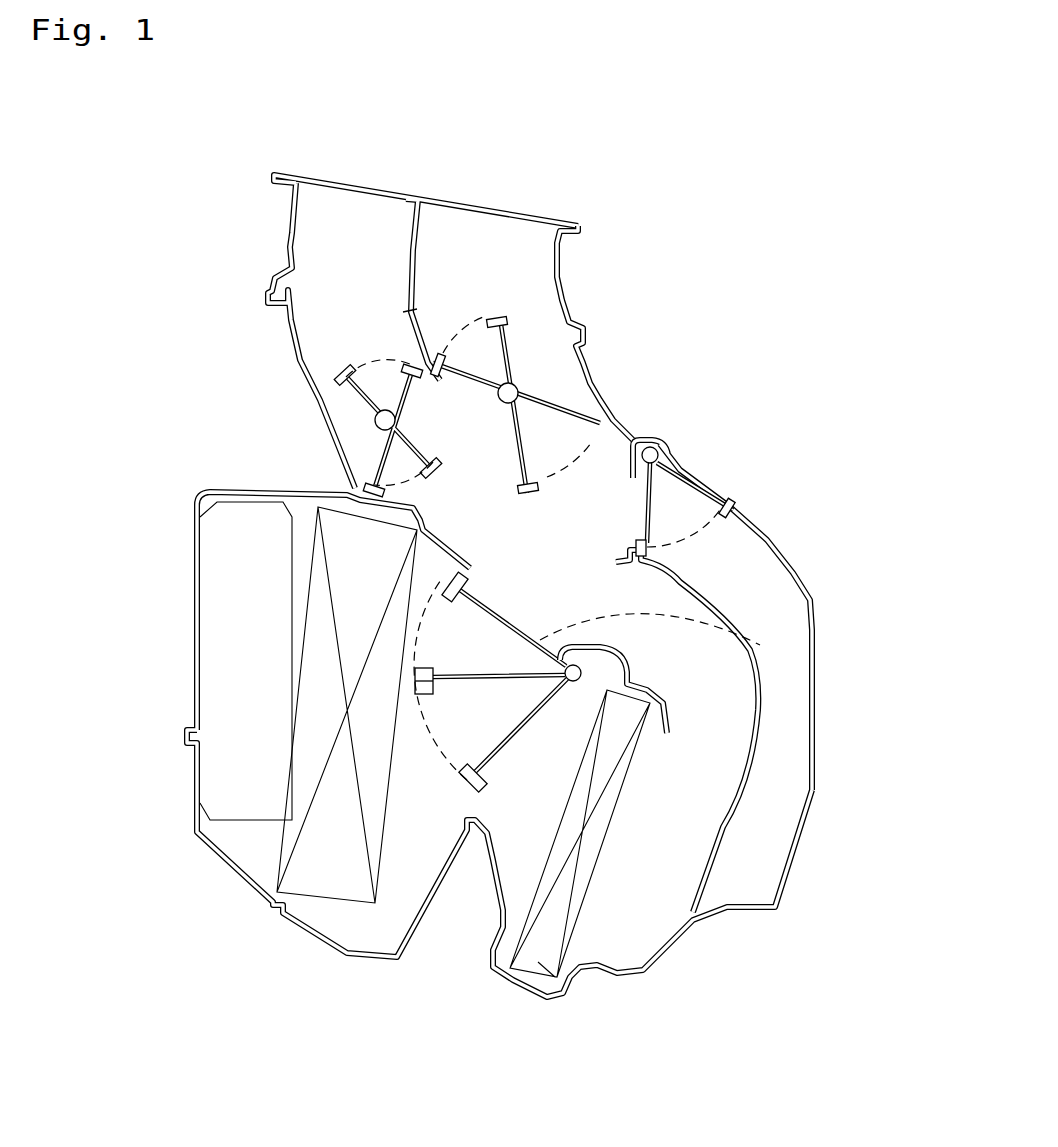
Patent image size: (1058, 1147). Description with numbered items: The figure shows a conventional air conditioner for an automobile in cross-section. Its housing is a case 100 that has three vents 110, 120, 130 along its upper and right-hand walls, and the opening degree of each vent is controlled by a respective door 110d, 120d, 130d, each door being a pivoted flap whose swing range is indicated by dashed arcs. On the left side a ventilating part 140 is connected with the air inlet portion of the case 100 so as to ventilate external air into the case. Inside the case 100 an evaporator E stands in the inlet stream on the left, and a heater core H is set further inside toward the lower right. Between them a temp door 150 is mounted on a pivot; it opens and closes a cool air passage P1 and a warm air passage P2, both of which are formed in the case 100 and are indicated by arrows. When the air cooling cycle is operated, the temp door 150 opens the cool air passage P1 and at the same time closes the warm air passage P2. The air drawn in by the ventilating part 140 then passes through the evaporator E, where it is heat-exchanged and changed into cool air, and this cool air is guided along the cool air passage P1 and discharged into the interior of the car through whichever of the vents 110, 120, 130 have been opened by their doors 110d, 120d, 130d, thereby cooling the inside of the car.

The case 100 is at (213, 493).
The vent 110 is at (345, 234).
The vent 120 is at (475, 260).
The vent 130 is at (760, 517).
The ventilating part 140 is at (218, 618).
The temp door 150 is at (760, 645).
The door 110d is at (337, 380).
The door 120d is at (592, 399).
The door 130d is at (727, 505).
The evaporator E is at (323, 883).
The heater core H is at (557, 978).
The cool air passage P1 is at (487, 627).
The warm air passage P2 is at (487, 737).